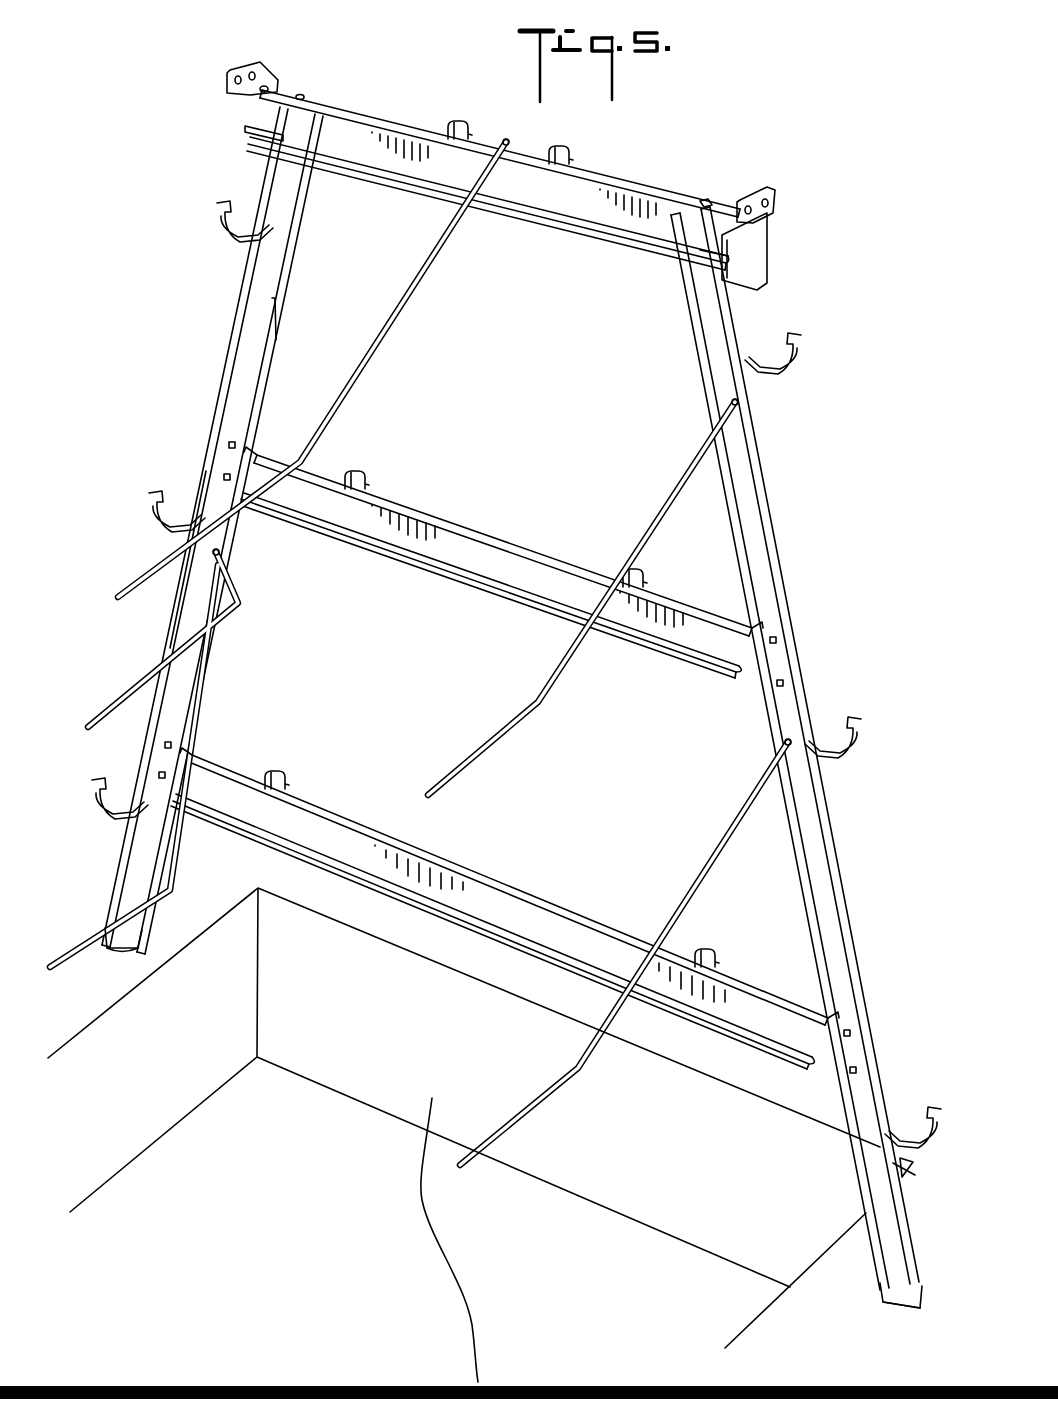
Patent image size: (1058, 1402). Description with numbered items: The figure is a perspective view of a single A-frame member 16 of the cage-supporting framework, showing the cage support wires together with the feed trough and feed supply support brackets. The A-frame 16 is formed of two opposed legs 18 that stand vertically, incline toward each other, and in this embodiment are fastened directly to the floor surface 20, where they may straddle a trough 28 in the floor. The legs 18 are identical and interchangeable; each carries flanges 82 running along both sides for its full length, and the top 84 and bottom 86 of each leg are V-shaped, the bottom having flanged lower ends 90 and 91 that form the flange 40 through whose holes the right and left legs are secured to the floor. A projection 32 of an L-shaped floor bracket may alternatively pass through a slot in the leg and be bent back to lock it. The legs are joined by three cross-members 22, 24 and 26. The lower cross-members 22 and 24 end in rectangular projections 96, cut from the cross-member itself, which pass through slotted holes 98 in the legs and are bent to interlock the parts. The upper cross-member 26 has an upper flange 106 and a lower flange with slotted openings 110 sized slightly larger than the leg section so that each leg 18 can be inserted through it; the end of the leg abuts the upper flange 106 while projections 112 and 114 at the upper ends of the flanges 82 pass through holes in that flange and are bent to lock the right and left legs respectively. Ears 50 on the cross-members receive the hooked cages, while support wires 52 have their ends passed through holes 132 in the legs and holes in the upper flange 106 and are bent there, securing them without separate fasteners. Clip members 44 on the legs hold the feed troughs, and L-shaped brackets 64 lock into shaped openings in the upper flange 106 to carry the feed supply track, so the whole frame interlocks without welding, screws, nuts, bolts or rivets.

The A-frame member 16 is at (507, 678).
The leg 18 is at (773, 568).
The floor surface 20 is at (247, 858).
The cross-member 22 is at (450, 872).
The cross-member 24 is at (500, 547).
The upper cross-member 26 is at (493, 179).
The trough 28 is at (380, 1257).
The projection 32 is at (278, 300).
The flange 40 is at (125, 957).
The clip member or bracket 44 is at (225, 235).
The projection or ear 50 is at (460, 125).
The support wire 52 is at (374, 363).
The bracket 64 is at (262, 72).
The flange 82 is at (172, 627).
The top of leg 84 is at (241, 132).
The bottom of leg 86 is at (517, 1092).
The flanged lower end 90 is at (893, 1292).
The flanged lower end 91 is at (150, 938).
The rectangular projection 96 is at (224, 477).
The slotted hole 98 is at (258, 452).
The upper flange 106 is at (402, 128).
The slotted opening 110 is at (682, 256).
The projection 112 is at (706, 203).
The projection 114 is at (303, 96).
The hole 132 is at (510, 147).